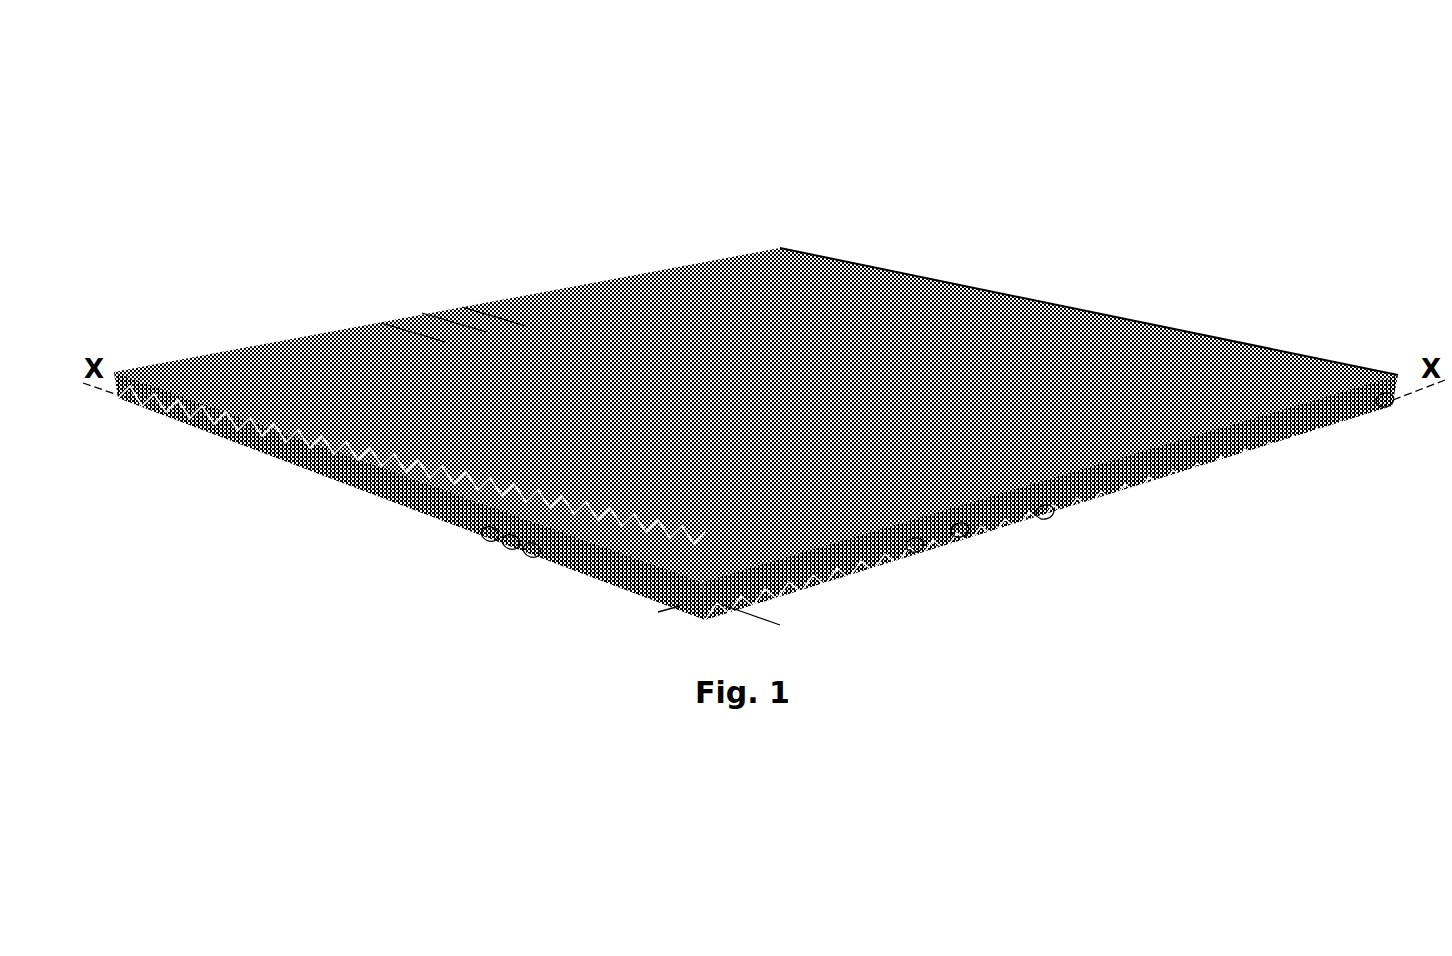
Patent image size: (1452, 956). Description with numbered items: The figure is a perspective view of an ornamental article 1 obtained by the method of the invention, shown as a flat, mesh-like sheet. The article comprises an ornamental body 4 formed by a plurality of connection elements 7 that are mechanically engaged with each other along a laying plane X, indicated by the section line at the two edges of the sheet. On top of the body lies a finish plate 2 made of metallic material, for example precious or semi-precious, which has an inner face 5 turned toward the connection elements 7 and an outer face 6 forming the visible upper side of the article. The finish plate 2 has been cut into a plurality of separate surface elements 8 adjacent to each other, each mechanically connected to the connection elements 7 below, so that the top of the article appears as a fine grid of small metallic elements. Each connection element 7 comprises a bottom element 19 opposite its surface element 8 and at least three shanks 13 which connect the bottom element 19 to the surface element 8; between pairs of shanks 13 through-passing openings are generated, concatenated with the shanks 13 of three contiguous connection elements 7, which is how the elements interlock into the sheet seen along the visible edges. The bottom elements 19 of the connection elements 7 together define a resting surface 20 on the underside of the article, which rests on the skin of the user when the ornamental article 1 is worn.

The ornamental article 1 is at (779, 335).
The finish plate 2 is at (756, 380).
The ornamental body 4 is at (1073, 497).
The inner face 5 is at (1313, 358).
The outer face 6 is at (1396, 402).
The connection element 7 is at (960, 530).
The surface element 8 is at (462, 307).
The shank 13 is at (409, 503).
The bottom element 19 is at (525, 553).
The resting surface 20 is at (1040, 528).